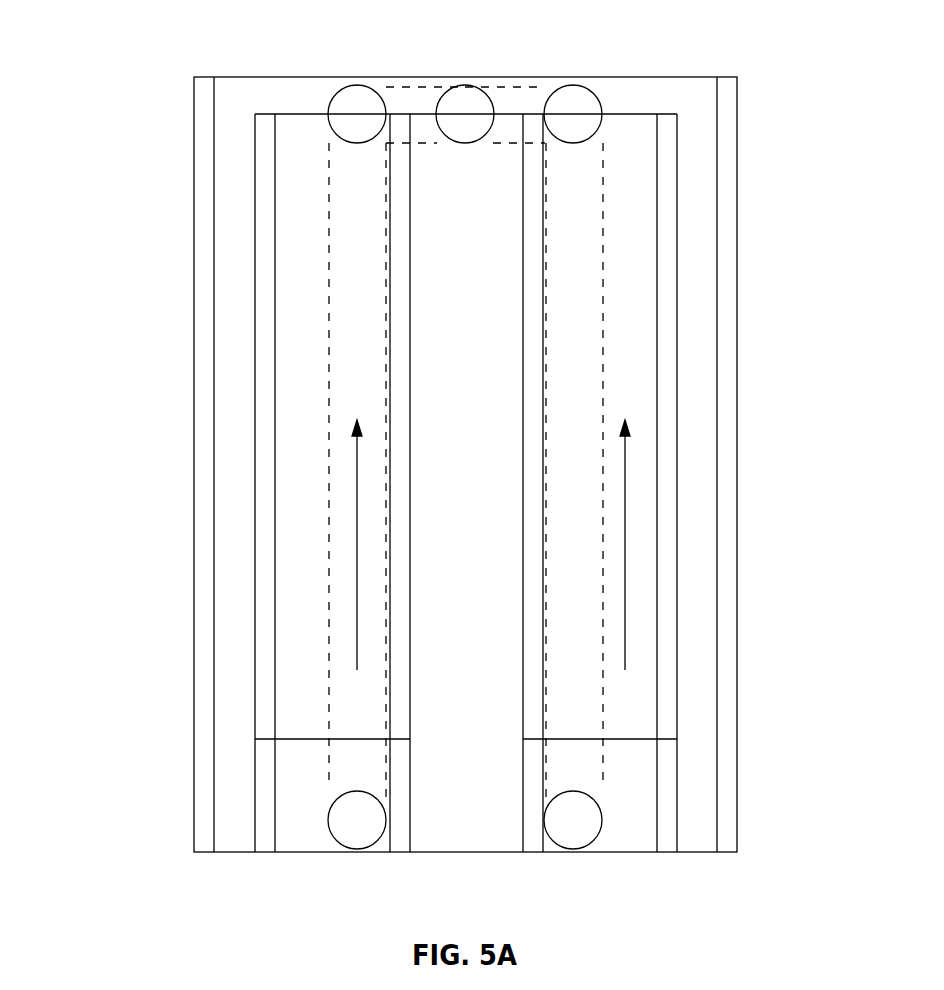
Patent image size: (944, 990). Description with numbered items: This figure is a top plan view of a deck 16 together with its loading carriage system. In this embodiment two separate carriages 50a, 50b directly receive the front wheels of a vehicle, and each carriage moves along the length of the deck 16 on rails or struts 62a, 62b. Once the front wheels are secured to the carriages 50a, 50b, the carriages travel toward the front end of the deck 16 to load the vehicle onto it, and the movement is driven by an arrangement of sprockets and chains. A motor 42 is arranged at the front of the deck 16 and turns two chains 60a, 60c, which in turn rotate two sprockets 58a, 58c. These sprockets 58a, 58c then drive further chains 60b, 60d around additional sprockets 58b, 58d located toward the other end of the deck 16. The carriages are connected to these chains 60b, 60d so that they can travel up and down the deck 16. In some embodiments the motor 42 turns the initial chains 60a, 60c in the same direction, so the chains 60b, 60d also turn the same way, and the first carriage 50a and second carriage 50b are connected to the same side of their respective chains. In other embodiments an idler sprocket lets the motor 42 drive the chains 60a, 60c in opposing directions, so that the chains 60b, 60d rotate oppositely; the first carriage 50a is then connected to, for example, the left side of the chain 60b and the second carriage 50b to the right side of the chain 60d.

The deck 16 is at (124, 43).
The motor 42 is at (465, 100).
The first carriage 50a is at (261, 780).
The second carriage 50b is at (674, 786).
The sprocket 58a is at (357, 98).
The further sprocket 58b is at (356, 833).
The sprocket 58c is at (573, 98).
The further sprocket 58d is at (573, 833).
The chain 60a is at (413, 87).
The chain 60b is at (329, 326).
The chain 60c is at (515, 87).
The chain 60d is at (603, 326).
The rail or strut 62a is at (403, 588).
The rail or strut 62b is at (528, 588).